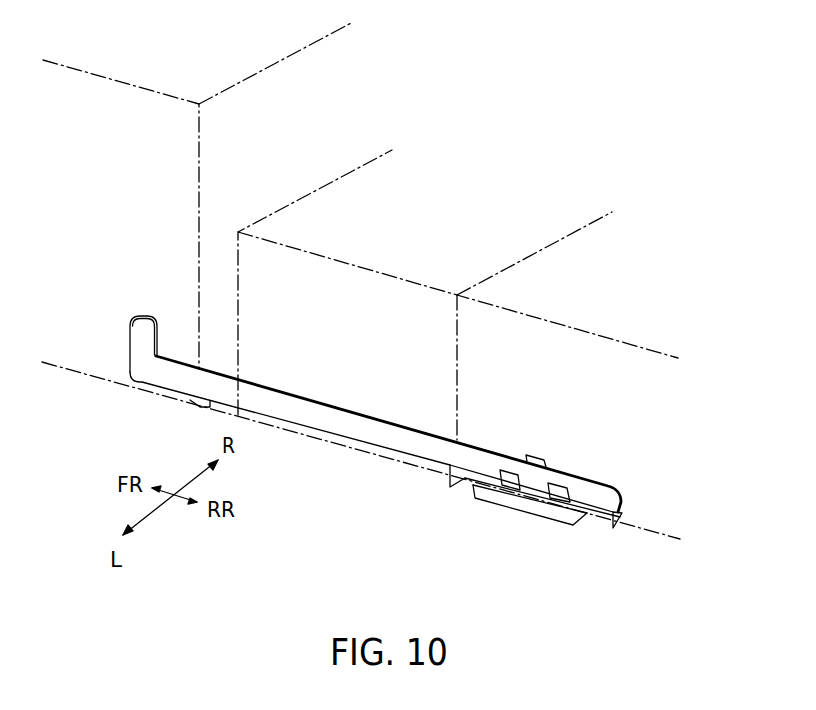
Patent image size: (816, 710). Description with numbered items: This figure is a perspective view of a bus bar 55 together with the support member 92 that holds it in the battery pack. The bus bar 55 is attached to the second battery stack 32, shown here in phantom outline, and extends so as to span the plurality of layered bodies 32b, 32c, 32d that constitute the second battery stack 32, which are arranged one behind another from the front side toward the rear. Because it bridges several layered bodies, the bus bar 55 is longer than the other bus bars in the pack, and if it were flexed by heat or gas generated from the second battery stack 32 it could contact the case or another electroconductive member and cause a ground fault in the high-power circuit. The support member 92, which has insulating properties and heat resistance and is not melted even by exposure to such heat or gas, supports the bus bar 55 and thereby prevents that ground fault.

The second battery stack 32 is at (538, 113).
The second layered body 32b is at (277, 65).
The third layered body 32c is at (413, 273).
The fourth layered body 32d is at (559, 318).
The bus bar 55 is at (385, 432).
The support member 92 is at (473, 498).